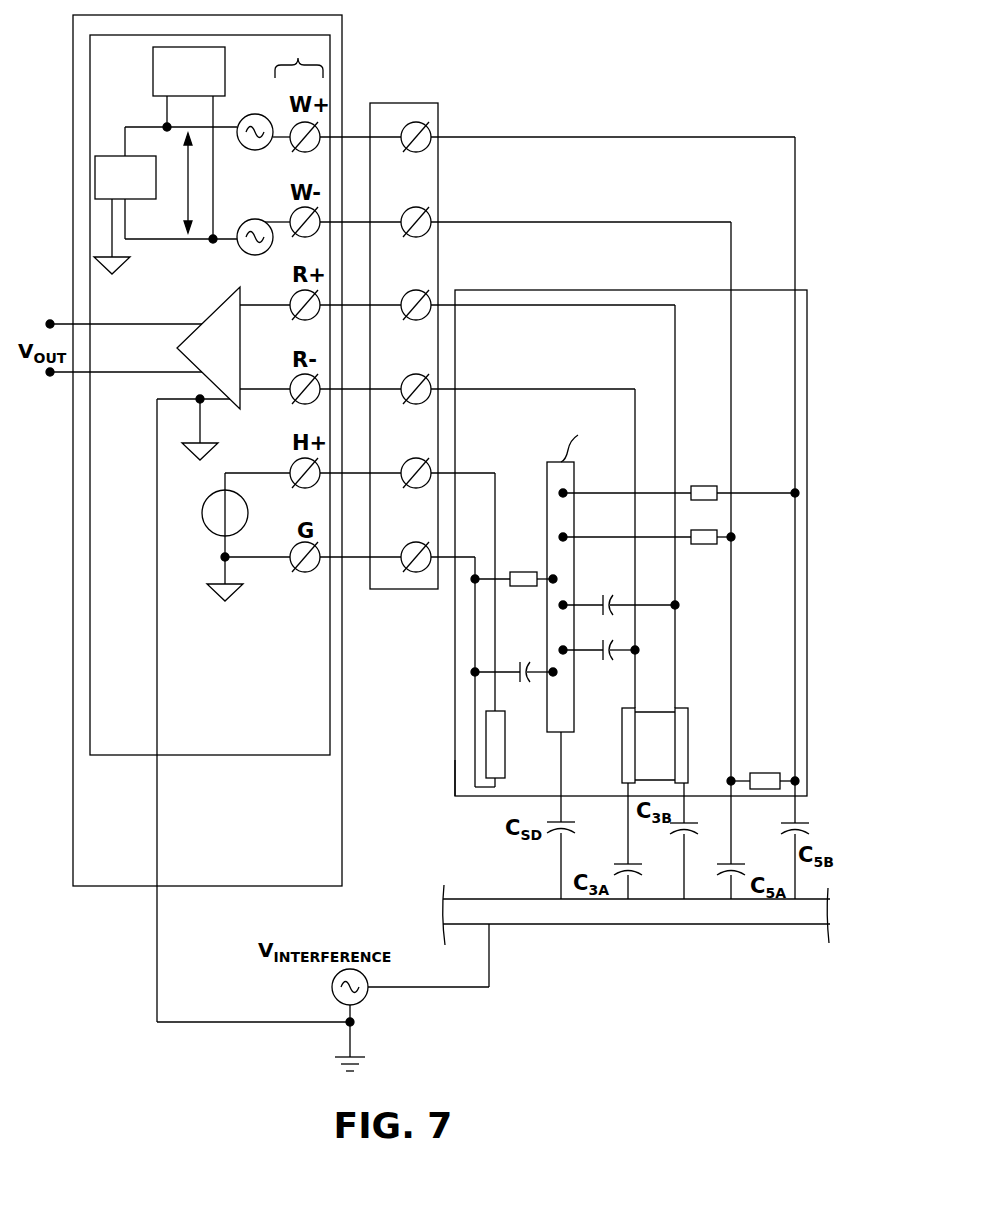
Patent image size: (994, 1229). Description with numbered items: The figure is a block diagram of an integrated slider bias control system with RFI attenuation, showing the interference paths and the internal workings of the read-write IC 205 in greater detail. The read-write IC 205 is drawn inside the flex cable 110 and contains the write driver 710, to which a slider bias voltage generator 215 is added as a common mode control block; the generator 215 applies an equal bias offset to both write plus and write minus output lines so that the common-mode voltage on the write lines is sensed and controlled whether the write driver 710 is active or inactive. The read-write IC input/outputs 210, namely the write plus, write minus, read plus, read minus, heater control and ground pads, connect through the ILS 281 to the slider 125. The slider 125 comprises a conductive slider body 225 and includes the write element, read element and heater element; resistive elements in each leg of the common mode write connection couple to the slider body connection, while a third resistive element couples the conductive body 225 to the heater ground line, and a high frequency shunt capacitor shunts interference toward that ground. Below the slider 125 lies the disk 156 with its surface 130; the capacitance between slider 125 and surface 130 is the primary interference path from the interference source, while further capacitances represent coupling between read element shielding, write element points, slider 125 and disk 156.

The flex cable 110 is at (207, 450).
The read-write IC 205 is at (210, 395).
The write driver 710 is at (189, 143).
The slider bias voltage generator 215 is at (125, 200).
The read-write IC input/outputs 210 is at (298, 58).
The integrated lead suspension (ILS) 281 is at (397, 103).
The conductive slider body 225 is at (665, 290).
The slider 125 is at (455, 778).
The disk surface 130 is at (447, 897).
The disk 156 is at (655, 913).